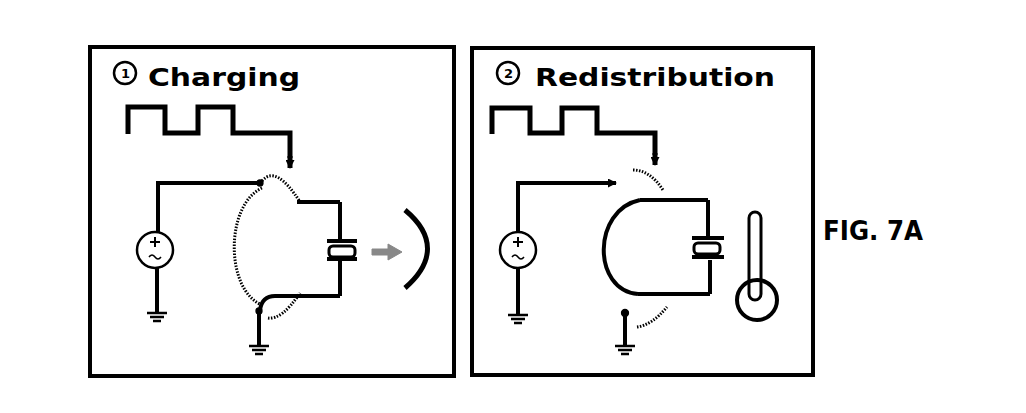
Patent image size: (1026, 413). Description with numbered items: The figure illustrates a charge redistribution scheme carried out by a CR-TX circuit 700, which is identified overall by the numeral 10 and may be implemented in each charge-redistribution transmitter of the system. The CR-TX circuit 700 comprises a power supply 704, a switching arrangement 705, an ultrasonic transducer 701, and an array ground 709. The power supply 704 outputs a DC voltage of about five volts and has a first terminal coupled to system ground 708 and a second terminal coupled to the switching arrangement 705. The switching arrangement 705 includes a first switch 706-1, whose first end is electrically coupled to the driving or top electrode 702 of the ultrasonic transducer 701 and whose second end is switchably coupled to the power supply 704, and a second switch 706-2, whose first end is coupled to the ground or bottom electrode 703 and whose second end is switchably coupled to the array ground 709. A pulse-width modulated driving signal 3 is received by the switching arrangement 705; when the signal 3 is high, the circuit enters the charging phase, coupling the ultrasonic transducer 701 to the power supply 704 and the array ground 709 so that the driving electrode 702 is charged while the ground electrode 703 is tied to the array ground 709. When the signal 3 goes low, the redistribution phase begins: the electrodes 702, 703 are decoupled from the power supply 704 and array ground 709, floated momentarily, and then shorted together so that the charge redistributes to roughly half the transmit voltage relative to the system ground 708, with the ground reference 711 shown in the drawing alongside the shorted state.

The charge redistribution circuit 10 is at (288, 19).
The CR-TX circuit 700 is at (62, 412).
The driving signal 3 is at (264, 126).
The ultrasonic transducer 701 is at (522, 204).
The driving electrode 702 is at (338, 239).
The ground electrode 703 is at (340, 262).
The power supply 704 is at (153, 228).
The switching arrangement 705 is at (265, 168).
The first switch 706-1 is at (266, 190).
The second switch 706-2 is at (268, 298).
The system ground 708 is at (152, 321).
The array ground 709 is at (245, 349).
The ground reference 711 is at (408, 208).